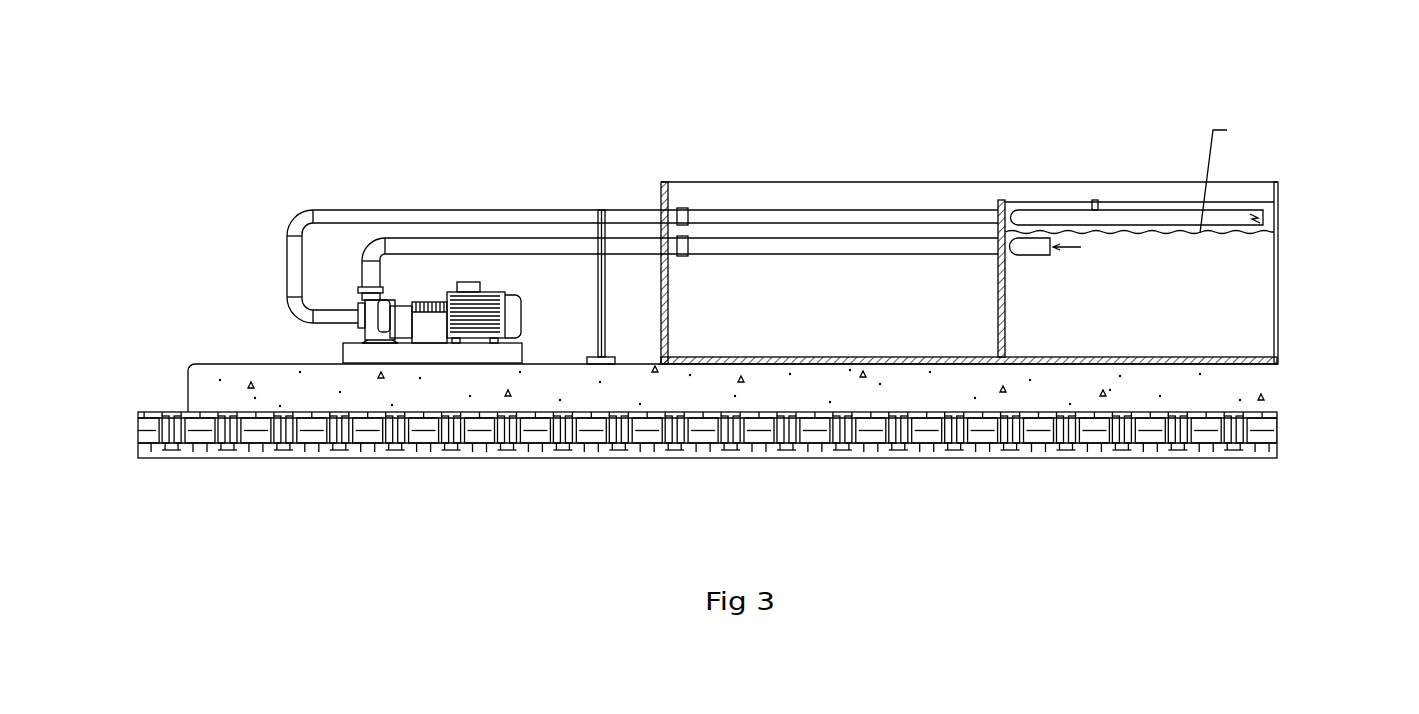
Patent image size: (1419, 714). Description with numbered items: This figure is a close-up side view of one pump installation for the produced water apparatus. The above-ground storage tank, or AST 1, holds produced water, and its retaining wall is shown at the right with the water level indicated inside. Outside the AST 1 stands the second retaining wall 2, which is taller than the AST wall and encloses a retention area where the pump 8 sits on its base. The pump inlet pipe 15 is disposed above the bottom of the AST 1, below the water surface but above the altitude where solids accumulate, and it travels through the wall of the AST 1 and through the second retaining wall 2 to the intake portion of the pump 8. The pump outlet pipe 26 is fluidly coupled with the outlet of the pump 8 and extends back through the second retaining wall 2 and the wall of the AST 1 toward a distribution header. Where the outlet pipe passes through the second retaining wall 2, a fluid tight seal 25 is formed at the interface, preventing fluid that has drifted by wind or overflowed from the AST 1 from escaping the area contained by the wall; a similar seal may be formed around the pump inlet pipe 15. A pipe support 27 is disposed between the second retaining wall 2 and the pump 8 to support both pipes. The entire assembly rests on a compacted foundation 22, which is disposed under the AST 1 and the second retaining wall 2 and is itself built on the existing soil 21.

The AST 1 is at (1003, 200).
The second retaining wall 2 is at (666, 183).
The pump 8 is at (514, 310).
The pump inlet pipe 15 is at (1037, 255).
The existing soil 21 is at (152, 427).
The compacted foundation 22 is at (228, 388).
The fluid tight seal 25 is at (687, 213).
The pump outlet pipe 26 is at (1143, 208).
The pipe support 27 is at (603, 210).